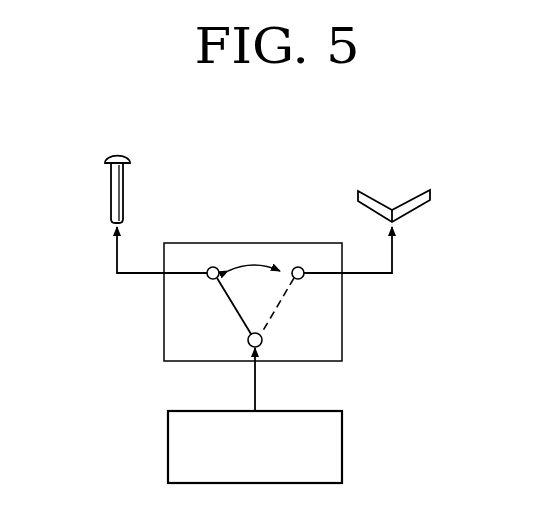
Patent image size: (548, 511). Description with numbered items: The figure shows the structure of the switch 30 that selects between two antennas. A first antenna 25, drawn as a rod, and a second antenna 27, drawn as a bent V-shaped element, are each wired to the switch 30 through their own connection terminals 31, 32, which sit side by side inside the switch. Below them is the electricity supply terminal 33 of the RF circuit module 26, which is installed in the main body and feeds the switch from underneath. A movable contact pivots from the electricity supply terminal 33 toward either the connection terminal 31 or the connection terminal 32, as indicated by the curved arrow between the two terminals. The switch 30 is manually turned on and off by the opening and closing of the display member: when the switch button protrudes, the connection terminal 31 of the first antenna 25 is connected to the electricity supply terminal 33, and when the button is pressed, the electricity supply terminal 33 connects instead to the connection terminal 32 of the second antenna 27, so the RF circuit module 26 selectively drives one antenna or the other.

The first antenna 25 is at (110, 200).
The RF circuit module 26 is at (343, 433).
The second antenna 27 is at (417, 209).
The switch 30 is at (250, 241).
The connection terminal 31 is at (211, 267).
The connection terminal 32 is at (299, 267).
The electricity supply terminal 33 is at (249, 344).